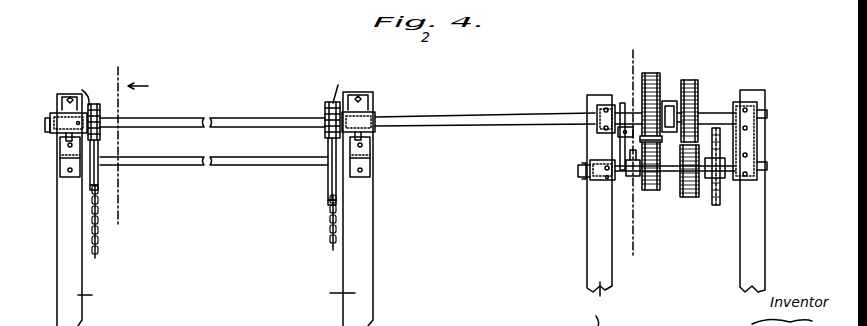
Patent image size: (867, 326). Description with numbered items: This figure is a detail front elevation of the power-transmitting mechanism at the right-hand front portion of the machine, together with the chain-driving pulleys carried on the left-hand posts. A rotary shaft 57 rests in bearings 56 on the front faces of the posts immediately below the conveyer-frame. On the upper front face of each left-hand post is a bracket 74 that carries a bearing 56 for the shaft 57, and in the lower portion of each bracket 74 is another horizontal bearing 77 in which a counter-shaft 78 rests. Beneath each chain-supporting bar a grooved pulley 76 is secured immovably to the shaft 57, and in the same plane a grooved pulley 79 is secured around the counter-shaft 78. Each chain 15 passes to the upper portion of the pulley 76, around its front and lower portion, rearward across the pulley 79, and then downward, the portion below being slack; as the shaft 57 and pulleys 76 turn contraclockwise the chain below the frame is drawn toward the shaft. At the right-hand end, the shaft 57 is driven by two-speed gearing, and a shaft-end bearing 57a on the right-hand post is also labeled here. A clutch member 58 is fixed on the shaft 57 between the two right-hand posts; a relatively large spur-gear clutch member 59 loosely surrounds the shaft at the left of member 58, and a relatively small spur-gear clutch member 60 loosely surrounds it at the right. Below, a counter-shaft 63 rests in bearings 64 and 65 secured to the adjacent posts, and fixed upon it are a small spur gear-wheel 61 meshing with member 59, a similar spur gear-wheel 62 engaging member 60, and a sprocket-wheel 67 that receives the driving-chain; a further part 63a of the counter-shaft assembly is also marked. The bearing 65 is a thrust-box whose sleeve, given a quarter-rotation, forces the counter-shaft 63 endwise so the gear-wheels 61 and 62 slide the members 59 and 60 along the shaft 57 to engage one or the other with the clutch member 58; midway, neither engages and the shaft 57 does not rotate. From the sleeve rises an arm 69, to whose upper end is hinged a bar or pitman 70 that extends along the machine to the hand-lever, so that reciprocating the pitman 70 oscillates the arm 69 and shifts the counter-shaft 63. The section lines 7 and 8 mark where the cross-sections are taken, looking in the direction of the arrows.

The section line 7 7 is at (629, 151).
The section line 8 8 is at (130, 144).
The chain 15 is at (74, 88).
The bearings 56 is at (65, 130).
The rotary shaft 57 is at (478, 116).
The shaft bearing bracket 57a is at (753, 103).
The clutch member 58 is at (680, 82).
The spur-gear clutch member 59 is at (660, 70).
The spur-gear clutch member 60 is at (697, 82).
The spur gear-wheel 61 is at (668, 209).
The spur gear-wheel 62 is at (698, 145).
The counter-shaft 63 is at (730, 177).
The clutch 63a is at (630, 176).
The bearing 64 is at (767, 166).
The bearing 65 is at (597, 178).
The sprocket-wheel 67 is at (718, 205).
The arm 69 is at (619, 142).
The bar or pitman 70 is at (613, 108).
The bracket 74 is at (60, 160).
The grooved pulley 76 is at (102, 110).
The horizontal bearing 77 is at (100, 186).
The counter-shaft 78 is at (270, 160).
The grooved pulley 79 is at (102, 175).